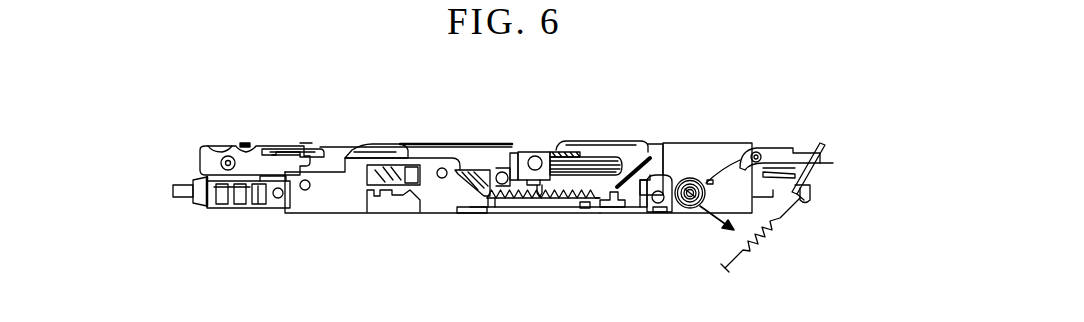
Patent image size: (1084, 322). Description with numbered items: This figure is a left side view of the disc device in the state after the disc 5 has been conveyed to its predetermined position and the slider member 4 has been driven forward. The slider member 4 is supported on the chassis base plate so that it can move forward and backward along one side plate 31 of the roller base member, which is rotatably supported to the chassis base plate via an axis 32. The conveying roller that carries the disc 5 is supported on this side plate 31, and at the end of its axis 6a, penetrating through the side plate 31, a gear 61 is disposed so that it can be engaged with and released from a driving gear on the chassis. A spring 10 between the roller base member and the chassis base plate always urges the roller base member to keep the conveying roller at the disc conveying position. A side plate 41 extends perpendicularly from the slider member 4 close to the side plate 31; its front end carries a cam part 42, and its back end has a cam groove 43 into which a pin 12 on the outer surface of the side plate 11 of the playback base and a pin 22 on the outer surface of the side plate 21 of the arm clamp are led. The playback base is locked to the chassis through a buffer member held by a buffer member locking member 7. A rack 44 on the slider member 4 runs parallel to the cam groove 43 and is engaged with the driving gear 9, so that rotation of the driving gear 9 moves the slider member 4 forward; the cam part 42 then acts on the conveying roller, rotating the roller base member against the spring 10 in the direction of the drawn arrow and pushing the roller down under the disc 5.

The slider member 4 is at (330, 175).
The disc 5 is at (833, 163).
The axis of the conveying roller 6a is at (688, 210).
The buffer member locking member 7 is at (175, 192).
The driving gear 9 is at (501, 170).
The spring 10 is at (774, 236).
The side plate of the playback base 11 is at (556, 148).
The pin 12 is at (542, 152).
The side plate of the arm clamp 21 is at (474, 148).
The pin 22 is at (486, 220).
The side plate 31 is at (713, 152).
The axis 32 is at (764, 150).
The side plate of the slider member 41 is at (686, 172).
The cam part 42 is at (730, 154).
The cam groove 43 is at (619, 150).
The rack 44 is at (521, 204).
The gear 61 is at (664, 216).